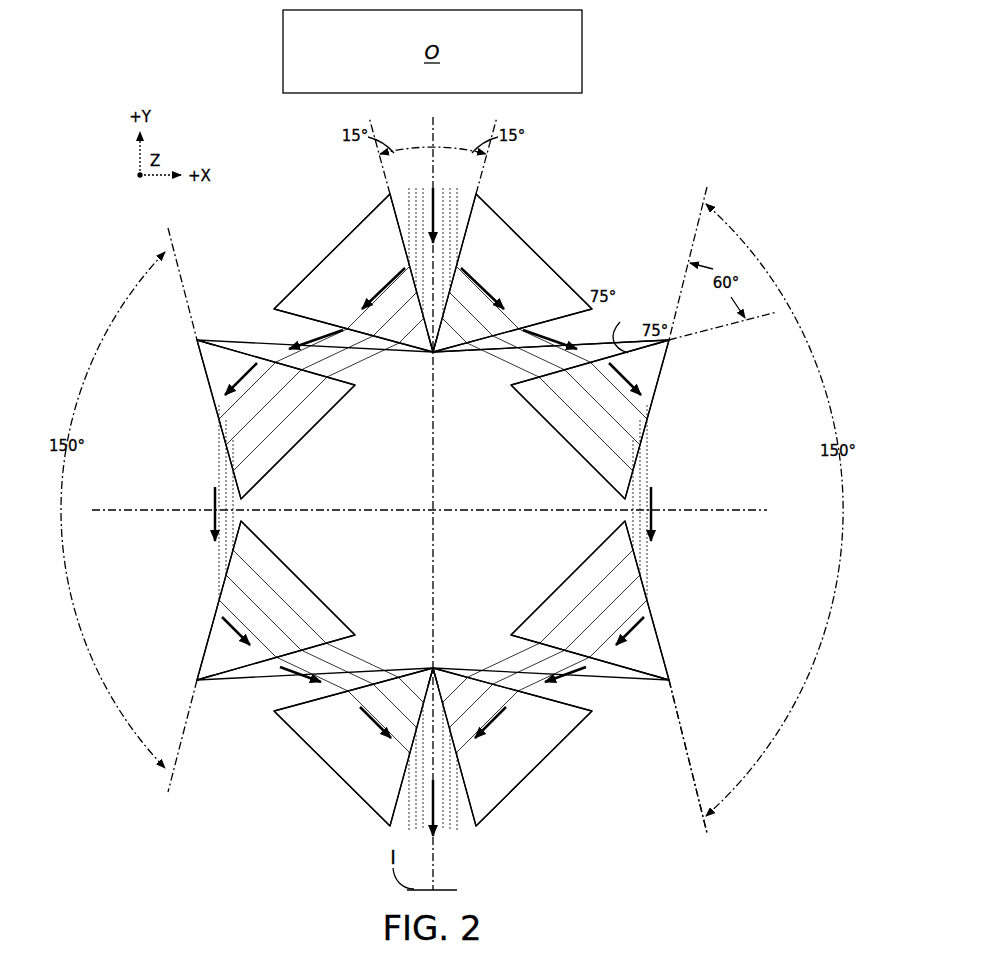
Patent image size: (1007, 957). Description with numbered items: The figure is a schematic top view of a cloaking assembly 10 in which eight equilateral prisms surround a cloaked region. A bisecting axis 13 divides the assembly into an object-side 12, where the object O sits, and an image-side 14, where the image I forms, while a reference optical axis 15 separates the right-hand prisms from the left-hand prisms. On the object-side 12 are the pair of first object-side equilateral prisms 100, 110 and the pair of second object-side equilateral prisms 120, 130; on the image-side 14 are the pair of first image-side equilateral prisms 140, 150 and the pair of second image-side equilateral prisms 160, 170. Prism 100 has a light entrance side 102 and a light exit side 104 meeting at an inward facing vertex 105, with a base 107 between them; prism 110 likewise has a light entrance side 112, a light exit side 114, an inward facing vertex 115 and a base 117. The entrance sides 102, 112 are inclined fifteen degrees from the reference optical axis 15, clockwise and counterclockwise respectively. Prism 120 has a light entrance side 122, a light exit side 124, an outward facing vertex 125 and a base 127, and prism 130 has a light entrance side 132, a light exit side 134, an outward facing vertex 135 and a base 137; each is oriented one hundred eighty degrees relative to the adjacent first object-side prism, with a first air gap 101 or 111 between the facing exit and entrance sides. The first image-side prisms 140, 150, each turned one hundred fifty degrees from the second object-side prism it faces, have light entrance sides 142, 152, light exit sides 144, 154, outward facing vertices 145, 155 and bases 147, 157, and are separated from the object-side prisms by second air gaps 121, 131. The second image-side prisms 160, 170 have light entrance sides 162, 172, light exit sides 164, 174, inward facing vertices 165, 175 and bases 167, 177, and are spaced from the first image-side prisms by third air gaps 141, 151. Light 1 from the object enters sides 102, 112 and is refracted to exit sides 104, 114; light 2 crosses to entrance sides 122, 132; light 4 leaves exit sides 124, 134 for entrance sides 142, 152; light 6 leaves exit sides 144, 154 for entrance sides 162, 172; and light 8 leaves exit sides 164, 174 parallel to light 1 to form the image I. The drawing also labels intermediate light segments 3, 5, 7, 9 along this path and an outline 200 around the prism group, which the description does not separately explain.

The cloaking assembly 10 is at (783, 160).
The object-side 12 is at (679, 230).
The bisecting axis 13 is at (748, 508).
The image-side 14 is at (629, 843).
The reference optical axis 15 is at (437, 135).
The light 1 is at (436, 183).
The light 2 is at (376, 285).
The light beam between first and second prisms 3 is at (297, 342).
The light 4 is at (240, 374).
The light beam between second and third prisms 5 is at (212, 500).
The light 6 is at (243, 648).
The light beam between third and fourth prisms 7 is at (300, 676).
The light 8 is at (375, 730).
The output light beam 9 is at (435, 835).
The first object-side equilateral prism 100 is at (524, 242).
The first air gap 101 is at (627, 291).
The light entrance side 102 is at (470, 226).
The light exit side 104 is at (560, 318).
The inward facing vertex 105 is at (439, 357).
The base 107 is at (554, 271).
The first object-side equilateral prism 110 is at (342, 242).
The first air gap 111 is at (214, 287).
The light entrance side 112 is at (396, 226).
The light exit side 114 is at (306, 318).
The inward facing vertex 115 is at (427, 357).
The base 117 is at (312, 271).
The second object-side equilateral prism 120 is at (659, 398).
The second air gap 121 is at (671, 463).
The light entrance side 122 is at (590, 343).
The light exit side 124 is at (658, 383).
The outward facing vertex 125 is at (671, 341).
The base 127 is at (558, 434).
The second object-side equilateral prism 130 is at (208, 395).
The second air gap 131 is at (192, 462).
The light entrance side 132 is at (236, 352).
The light exit side 134 is at (210, 382).
The outward facing vertex 135 is at (197, 341).
The base 137 is at (308, 434).
The first image-side equilateral prism 140 is at (657, 625).
The third air gap 141 is at (631, 731).
The light entrance side 142 is at (658, 636).
The light exit side 144 is at (621, 667).
The outward facing vertex 145 is at (669, 680).
The base 147 is at (558, 588).
The first image-side equilateral prism 150 is at (209, 625).
The third air gap 151 is at (210, 727).
The light entrance side 152 is at (208, 636).
The light exit side 154 is at (245, 667).
The outward facing vertex 155 is at (197, 680).
The base 157 is at (308, 588).
The second image-side equilateral prism 160 is at (525, 781).
The light entrance side 162 is at (566, 704).
The light exit side 164 is at (469, 795).
The inward facing vertex 165 is at (437, 664).
The base 167 is at (554, 748).
The second image-side equilateral prism 170 is at (341, 781).
The light entrance side 172 is at (300, 704).
The light exit side 174 is at (397, 795).
The inward facing vertex 175 is at (429, 664).
The base 177 is at (312, 748).
The prism assembly 200 is at (478, 497).